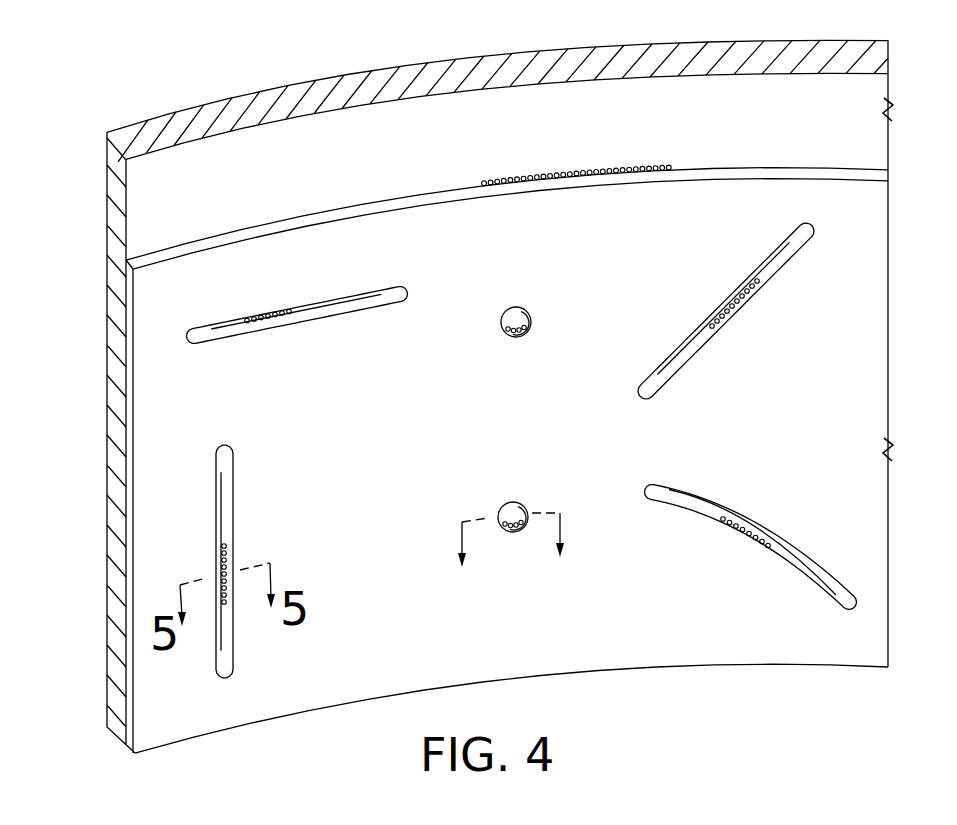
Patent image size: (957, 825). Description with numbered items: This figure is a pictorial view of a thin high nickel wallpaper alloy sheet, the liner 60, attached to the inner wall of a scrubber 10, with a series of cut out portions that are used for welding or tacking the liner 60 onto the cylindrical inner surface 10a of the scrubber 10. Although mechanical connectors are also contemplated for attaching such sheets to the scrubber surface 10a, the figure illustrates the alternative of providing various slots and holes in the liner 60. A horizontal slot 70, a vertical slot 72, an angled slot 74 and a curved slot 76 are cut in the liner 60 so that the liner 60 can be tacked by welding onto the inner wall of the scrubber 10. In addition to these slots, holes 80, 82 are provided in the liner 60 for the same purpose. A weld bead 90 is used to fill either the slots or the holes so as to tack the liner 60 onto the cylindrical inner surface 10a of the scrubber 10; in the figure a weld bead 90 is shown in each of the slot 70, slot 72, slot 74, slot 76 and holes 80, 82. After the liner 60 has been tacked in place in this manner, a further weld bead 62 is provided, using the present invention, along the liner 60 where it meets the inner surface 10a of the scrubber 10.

The scrubber 10 is at (257, 88).
The cylindrical inner surface of scrubber 10a is at (147, 230).
The liner 60 is at (315, 705).
The weld bead 62 is at (580, 171).
The horizontal slot 70 is at (337, 298).
The vertical slot 72 is at (223, 490).
The angled slot 74 is at (772, 261).
The curved slot 76 is at (704, 503).
The hole 80 is at (518, 315).
The hole 82 is at (514, 505).
The weld bead 90 is at (268, 322).